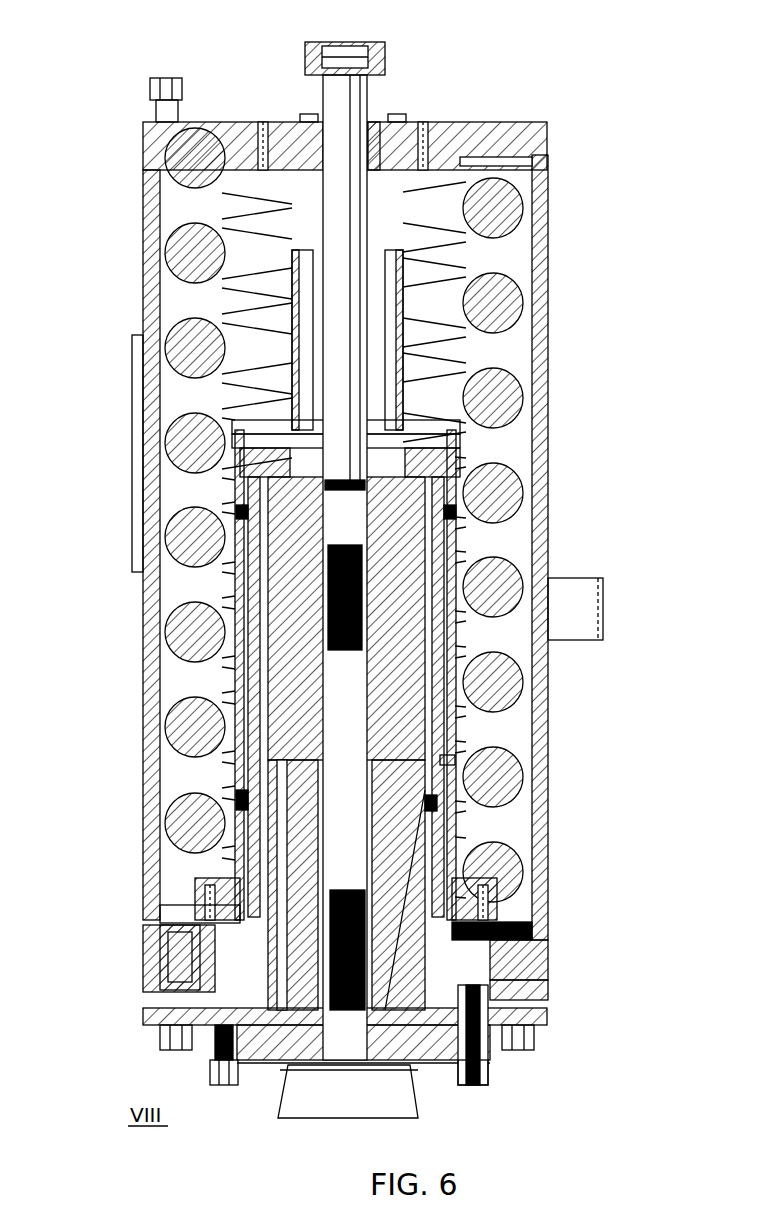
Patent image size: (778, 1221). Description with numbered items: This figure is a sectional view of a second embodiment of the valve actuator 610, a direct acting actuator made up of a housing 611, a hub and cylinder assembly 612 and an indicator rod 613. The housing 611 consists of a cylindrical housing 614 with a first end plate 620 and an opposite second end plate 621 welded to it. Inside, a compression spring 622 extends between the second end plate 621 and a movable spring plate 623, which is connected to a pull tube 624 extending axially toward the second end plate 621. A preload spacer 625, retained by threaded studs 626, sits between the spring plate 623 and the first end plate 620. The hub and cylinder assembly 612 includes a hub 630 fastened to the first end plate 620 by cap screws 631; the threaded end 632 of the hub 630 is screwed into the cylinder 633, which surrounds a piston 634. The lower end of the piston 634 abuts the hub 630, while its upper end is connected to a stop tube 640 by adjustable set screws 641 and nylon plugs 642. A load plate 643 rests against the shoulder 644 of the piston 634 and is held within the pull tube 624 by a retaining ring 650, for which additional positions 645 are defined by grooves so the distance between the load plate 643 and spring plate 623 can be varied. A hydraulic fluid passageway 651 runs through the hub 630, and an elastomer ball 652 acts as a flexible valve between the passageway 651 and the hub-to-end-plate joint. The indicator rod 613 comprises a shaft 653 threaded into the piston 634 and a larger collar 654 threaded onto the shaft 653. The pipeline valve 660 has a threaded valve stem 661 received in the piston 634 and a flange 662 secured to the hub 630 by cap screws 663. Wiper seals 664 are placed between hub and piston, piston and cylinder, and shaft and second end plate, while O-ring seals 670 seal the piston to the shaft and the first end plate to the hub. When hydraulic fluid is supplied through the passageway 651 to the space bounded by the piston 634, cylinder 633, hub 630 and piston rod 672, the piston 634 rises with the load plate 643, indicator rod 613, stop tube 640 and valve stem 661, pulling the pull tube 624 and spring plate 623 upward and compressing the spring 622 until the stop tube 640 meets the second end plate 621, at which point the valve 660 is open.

The valve actuator 610 is at (118, 278).
The housing 611 is at (552, 292).
The hub and cylinder assembly 612 is at (563, 1005).
The indicator rod 613 is at (297, 100).
The cylindrical housing 614 is at (548, 250).
The first end plate 620 is at (550, 975).
The second end plate 621 is at (462, 122).
The compression spring 622 is at (500, 187).
The spring plate 623 is at (500, 905).
The pull tube 624 is at (455, 540).
The preload spacer 625 is at (515, 930).
The threaded studs 626 is at (190, 892).
The hub 630 is at (550, 995).
The cap screws 631 is at (180, 1050).
The threaded end 632 is at (245, 798).
The cylinder 633 is at (515, 680).
The piston 634 is at (440, 585).
The stop tube 640 is at (406, 356).
The adjustable set screws 641 is at (255, 428).
The nylon plugs 642 is at (245, 447).
The load plate 643 is at (445, 440).
The shoulder 644 is at (240, 468).
The additional positions 645 is at (462, 488).
The retaining ring 650 is at (455, 458).
The hydraulic fluid passageway 651 is at (288, 852).
The elastomer ball 652 is at (180, 1000).
The shaft 653 is at (390, 130).
The collar 654 is at (378, 50).
The valve 660 is at (320, 1105).
The valve stem 661 is at (380, 832).
The flange 662 is at (500, 1040).
The cap screws 663 is at (273, 1098).
The wiper seals 664 is at (303, 114).
The O-ring seals 670 is at (455, 513).
The piston rod 672 is at (440, 800).